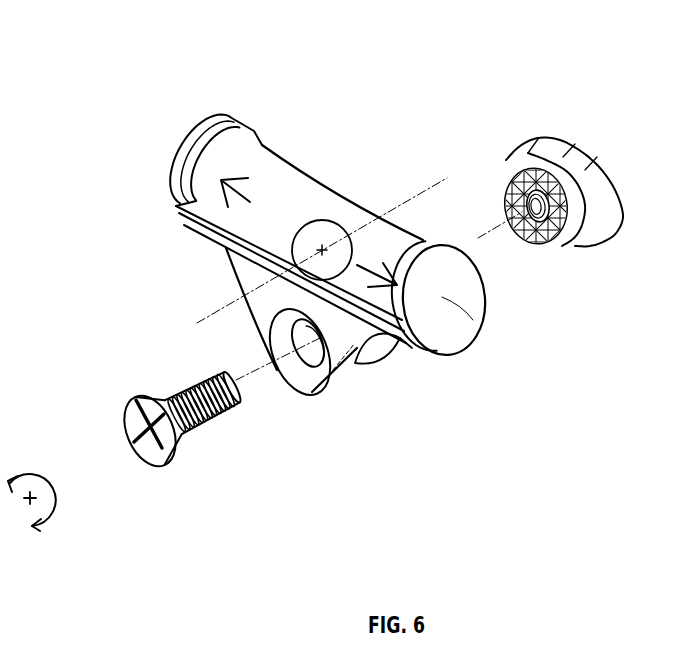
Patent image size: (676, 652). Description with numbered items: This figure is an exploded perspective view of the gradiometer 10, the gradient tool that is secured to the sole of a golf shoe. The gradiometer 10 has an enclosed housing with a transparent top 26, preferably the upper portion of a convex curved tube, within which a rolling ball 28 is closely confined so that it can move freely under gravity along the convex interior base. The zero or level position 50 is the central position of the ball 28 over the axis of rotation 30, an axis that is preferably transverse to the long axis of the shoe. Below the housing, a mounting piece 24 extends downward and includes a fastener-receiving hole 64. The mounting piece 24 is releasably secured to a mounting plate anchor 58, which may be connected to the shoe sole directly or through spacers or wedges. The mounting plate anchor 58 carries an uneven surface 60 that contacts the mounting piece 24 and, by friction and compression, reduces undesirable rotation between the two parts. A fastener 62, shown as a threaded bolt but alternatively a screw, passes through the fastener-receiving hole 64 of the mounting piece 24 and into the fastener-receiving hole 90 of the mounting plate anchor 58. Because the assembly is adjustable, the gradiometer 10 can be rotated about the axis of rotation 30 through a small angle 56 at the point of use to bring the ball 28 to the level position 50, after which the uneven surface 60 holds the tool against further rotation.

The gradiometer 10 is at (346, 298).
The mounting piece 24 is at (319, 393).
The transparent top 26 is at (277, 153).
The rolling ball 28 is at (321, 218).
The axis of rotation 30 is at (483, 238).
The zero or level position 50 is at (342, 224).
The small angle 56 is at (32, 522).
The mounting plate anchor 58 is at (544, 221).
The uneven surface 60 is at (546, 256).
The fastener 62 is at (136, 396).
The fastener-receiving hole 64 is at (279, 385).
The fastener-receiving hole 90 is at (529, 235).